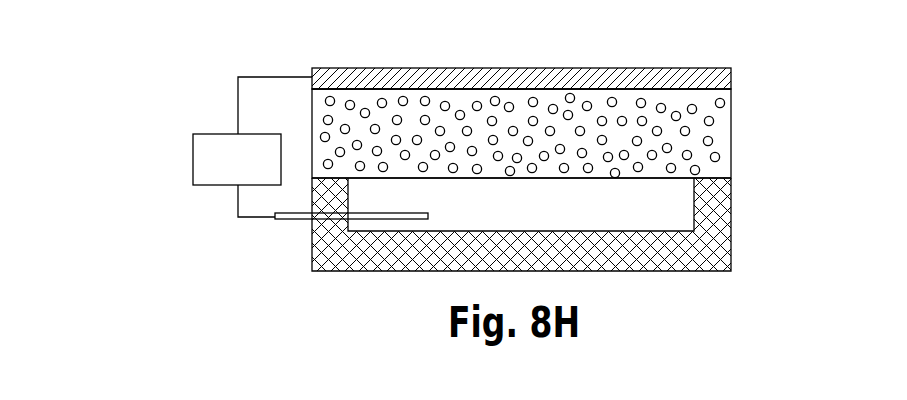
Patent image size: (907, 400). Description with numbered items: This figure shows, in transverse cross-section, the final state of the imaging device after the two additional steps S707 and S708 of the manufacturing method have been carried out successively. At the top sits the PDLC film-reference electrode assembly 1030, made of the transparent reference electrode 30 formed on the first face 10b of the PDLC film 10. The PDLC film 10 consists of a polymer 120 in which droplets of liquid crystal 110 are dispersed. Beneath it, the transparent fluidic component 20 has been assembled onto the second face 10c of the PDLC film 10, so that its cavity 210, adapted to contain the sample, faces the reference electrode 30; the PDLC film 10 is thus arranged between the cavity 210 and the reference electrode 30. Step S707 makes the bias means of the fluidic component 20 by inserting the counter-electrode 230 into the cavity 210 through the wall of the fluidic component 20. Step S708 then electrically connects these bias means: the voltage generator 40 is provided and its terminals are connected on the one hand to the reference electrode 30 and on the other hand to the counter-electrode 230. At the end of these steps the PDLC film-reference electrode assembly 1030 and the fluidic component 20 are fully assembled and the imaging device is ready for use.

The step of making the bias means S707 is at (132, 40).
The step of electrically connecting the bias means S708 is at (167, 59).
The PDLC film-reference electrode assembly 1030 is at (595, 125).
The reference electrode 30 is at (716, 79).
The PDLC film 10 is at (572, 125).
The droplets of liquid crystal 110 is at (714, 122).
The polymer 120 is at (703, 148).
The first face of the PDLC film 10b is at (547, 76).
The second face of the PDLC film 10c is at (590, 184).
The fluidic component 20 is at (517, 224).
The cavity 210 is at (672, 209).
The voltage generator 40 is at (204, 186).
The counter-electrode 230 is at (283, 220).